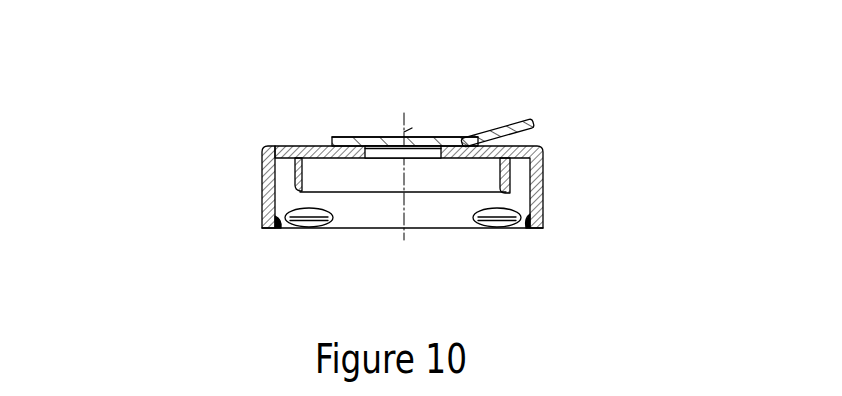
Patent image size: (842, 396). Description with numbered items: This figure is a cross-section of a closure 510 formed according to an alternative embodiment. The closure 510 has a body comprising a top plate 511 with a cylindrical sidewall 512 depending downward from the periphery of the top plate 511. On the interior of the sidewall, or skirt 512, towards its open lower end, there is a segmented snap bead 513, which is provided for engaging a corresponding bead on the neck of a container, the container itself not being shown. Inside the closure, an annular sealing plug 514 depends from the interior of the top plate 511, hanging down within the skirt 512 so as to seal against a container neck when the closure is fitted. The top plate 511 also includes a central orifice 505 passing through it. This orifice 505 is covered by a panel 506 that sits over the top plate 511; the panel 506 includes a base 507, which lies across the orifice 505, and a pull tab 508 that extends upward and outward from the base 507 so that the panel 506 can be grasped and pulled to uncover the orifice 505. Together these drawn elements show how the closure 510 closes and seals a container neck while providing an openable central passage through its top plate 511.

The central orifice 505 is at (420, 152).
The panel 506 is at (437, 137).
The base 507 is at (422, 137).
The pull tab 508 is at (513, 118).
The closure 510 is at (217, 148).
The top plate 511 is at (288, 146).
The cylindrical sidewall 512 is at (263, 202).
The segmented snap bead 513 is at (280, 228).
The annular sealing plug 514 is at (507, 178).